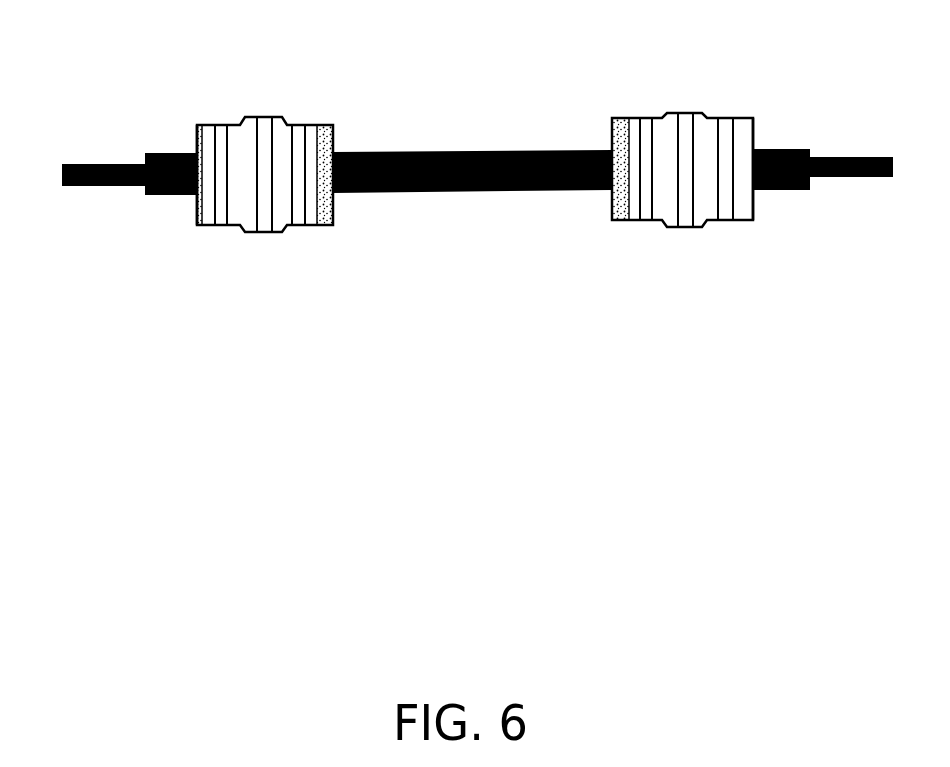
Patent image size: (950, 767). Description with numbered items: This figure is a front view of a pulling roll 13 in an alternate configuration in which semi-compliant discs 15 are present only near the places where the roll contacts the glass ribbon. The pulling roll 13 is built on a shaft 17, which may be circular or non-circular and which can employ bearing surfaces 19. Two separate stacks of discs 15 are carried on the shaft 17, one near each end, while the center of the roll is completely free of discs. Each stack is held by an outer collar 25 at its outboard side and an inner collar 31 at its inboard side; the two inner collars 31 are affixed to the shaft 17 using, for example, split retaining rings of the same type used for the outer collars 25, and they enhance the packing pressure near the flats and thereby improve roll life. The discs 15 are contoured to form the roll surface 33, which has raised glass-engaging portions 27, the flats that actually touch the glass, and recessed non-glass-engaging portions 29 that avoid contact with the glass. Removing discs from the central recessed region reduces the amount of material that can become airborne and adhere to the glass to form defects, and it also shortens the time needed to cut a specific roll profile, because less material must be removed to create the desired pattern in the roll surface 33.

The pulling roll 13 is at (458, 202).
The disc 15 is at (680, 153).
The shaft 17 is at (61, 168).
The bearing surface 19 is at (152, 157).
The outer collar 25 is at (195, 207).
The glass-engaging portions of roll surface 27 is at (680, 115).
The non-glass-engaging portions of roll surface 29 is at (638, 118).
The inner collar 31 is at (327, 199).
The roll surface 33 is at (313, 108).